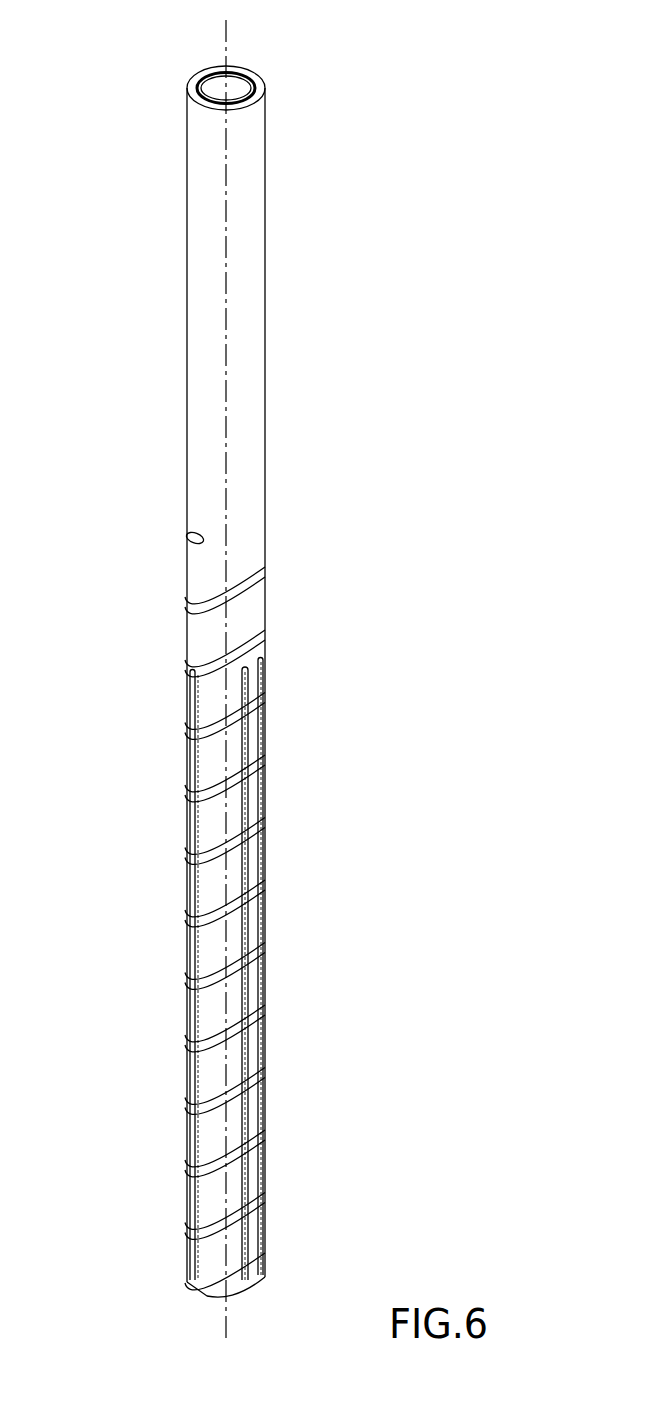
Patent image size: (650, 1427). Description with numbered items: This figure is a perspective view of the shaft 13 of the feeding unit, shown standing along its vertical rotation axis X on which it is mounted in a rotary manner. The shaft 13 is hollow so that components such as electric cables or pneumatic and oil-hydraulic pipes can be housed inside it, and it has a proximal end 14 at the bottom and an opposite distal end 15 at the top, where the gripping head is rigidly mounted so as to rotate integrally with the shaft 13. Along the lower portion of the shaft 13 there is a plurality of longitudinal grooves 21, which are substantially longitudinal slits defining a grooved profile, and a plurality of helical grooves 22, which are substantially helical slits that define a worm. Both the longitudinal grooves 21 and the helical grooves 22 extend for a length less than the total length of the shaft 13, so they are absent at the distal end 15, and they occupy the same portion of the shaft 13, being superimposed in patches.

The shaft 13 is at (157, 348).
The proximal end 14 is at (202, 1307).
The distal end 15 is at (265, 63).
The longitudinal grooves 21 is at (247, 870).
The helical grooves 22 is at (253, 712).